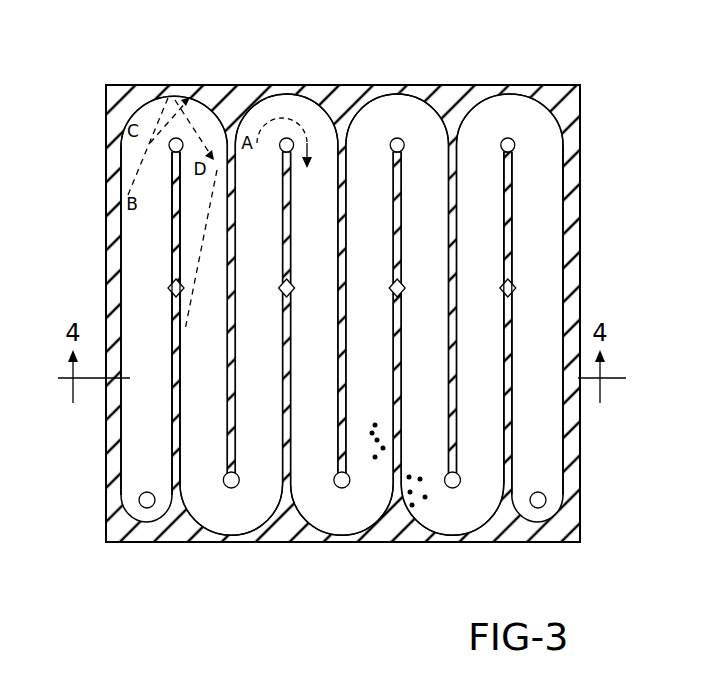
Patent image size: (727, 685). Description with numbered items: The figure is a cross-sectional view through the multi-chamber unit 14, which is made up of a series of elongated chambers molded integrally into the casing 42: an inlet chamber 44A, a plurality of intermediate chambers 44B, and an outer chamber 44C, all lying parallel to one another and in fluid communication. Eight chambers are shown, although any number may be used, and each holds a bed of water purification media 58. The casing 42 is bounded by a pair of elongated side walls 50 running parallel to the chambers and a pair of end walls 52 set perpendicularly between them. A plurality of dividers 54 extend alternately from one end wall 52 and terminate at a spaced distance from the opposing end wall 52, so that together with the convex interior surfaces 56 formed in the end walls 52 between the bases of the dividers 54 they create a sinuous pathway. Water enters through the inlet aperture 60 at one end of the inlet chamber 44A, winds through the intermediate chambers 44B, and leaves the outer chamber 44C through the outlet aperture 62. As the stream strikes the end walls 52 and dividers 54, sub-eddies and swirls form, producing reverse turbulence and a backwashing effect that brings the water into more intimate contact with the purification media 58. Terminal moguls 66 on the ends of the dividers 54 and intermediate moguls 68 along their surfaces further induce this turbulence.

The multi-chamber unit 14 is at (584, 68).
The casing 42 is at (584, 112).
The side walls 50 is at (107, 210).
The end walls 52 is at (342, 86).
The dividers 54 is at (291, 213).
The convex interior surfaces 56 is at (182, 98).
The purification media 58 is at (420, 480).
The inlet aperture 60 is at (141, 502).
The outlet aperture 62 is at (546, 502).
The terminal moguls 66 is at (399, 138).
The intermediate moguls 68 is at (291, 288).
The inlet chamber 44A is at (130, 335).
The intermediate chambers 44B is at (184, 367).
The outer chamber 44C is at (519, 367).